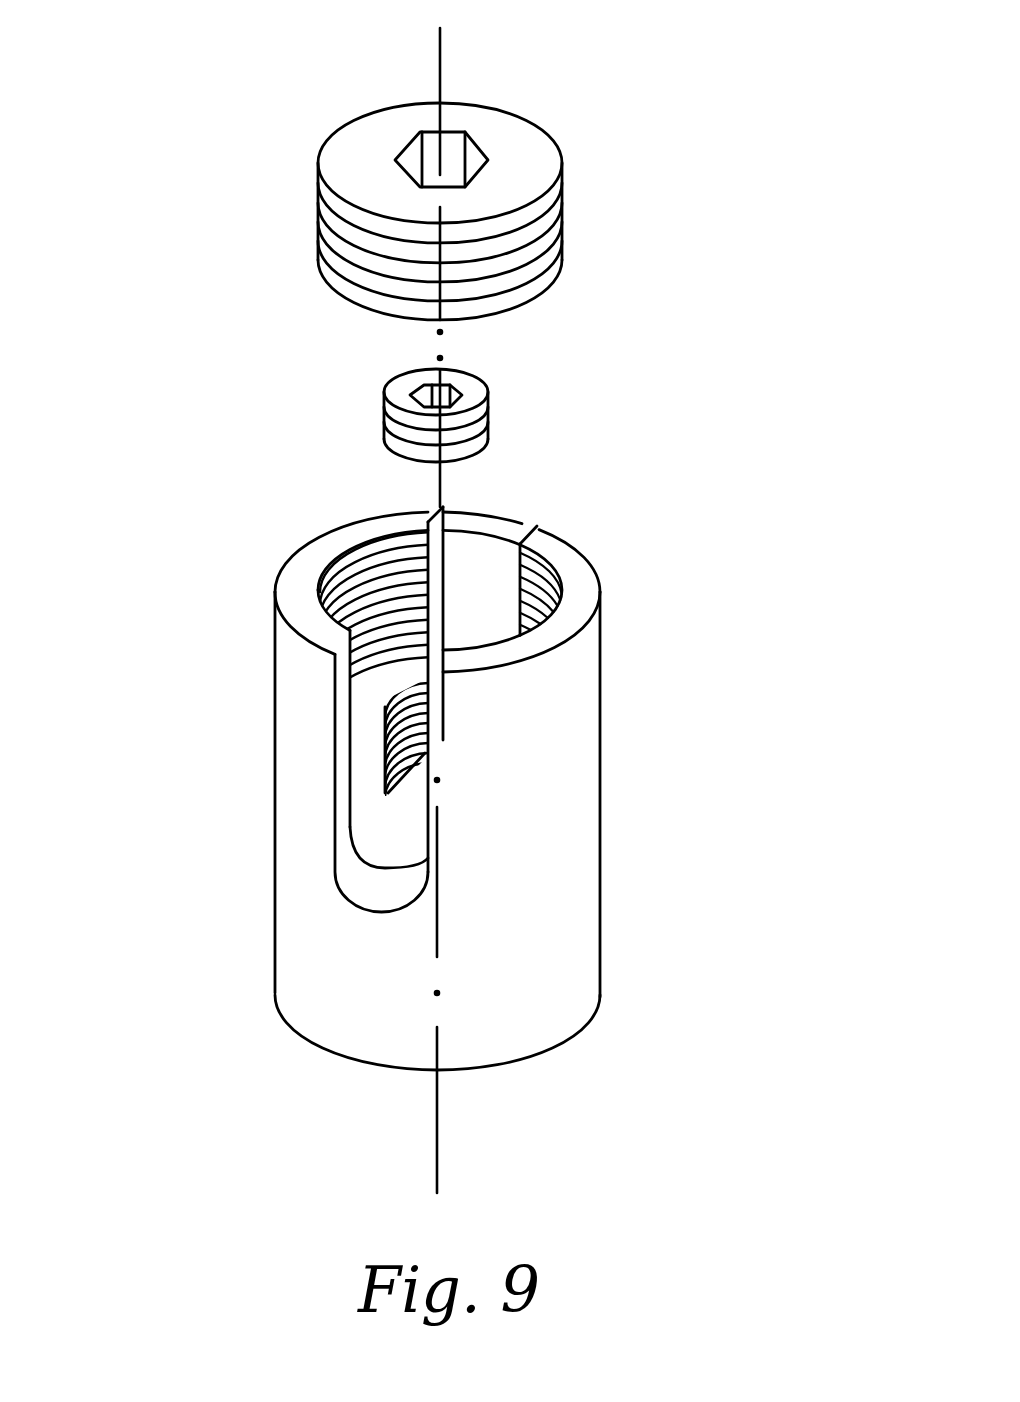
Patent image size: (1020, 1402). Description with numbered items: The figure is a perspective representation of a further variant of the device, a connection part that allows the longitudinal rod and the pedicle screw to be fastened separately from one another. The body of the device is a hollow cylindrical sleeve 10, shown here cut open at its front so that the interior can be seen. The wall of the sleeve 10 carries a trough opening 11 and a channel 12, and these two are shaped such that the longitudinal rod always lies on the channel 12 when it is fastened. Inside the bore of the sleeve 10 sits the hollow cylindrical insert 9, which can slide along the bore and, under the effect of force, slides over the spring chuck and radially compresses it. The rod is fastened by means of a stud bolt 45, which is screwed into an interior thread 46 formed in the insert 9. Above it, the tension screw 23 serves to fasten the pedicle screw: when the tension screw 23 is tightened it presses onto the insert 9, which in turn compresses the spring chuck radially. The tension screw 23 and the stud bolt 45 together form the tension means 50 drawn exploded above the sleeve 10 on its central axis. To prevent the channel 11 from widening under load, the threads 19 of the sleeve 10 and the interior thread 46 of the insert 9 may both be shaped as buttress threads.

The insert 9 is at (365, 783).
The sleeve 10 is at (580, 945).
The trough opening 11 is at (347, 892).
The channel 12 is at (387, 848).
The thread 19 is at (412, 558).
The tension screw 23 is at (538, 173).
The stud bolt 45 is at (478, 398).
The interior thread 46 is at (350, 757).
The tension means 50 is at (640, 262).